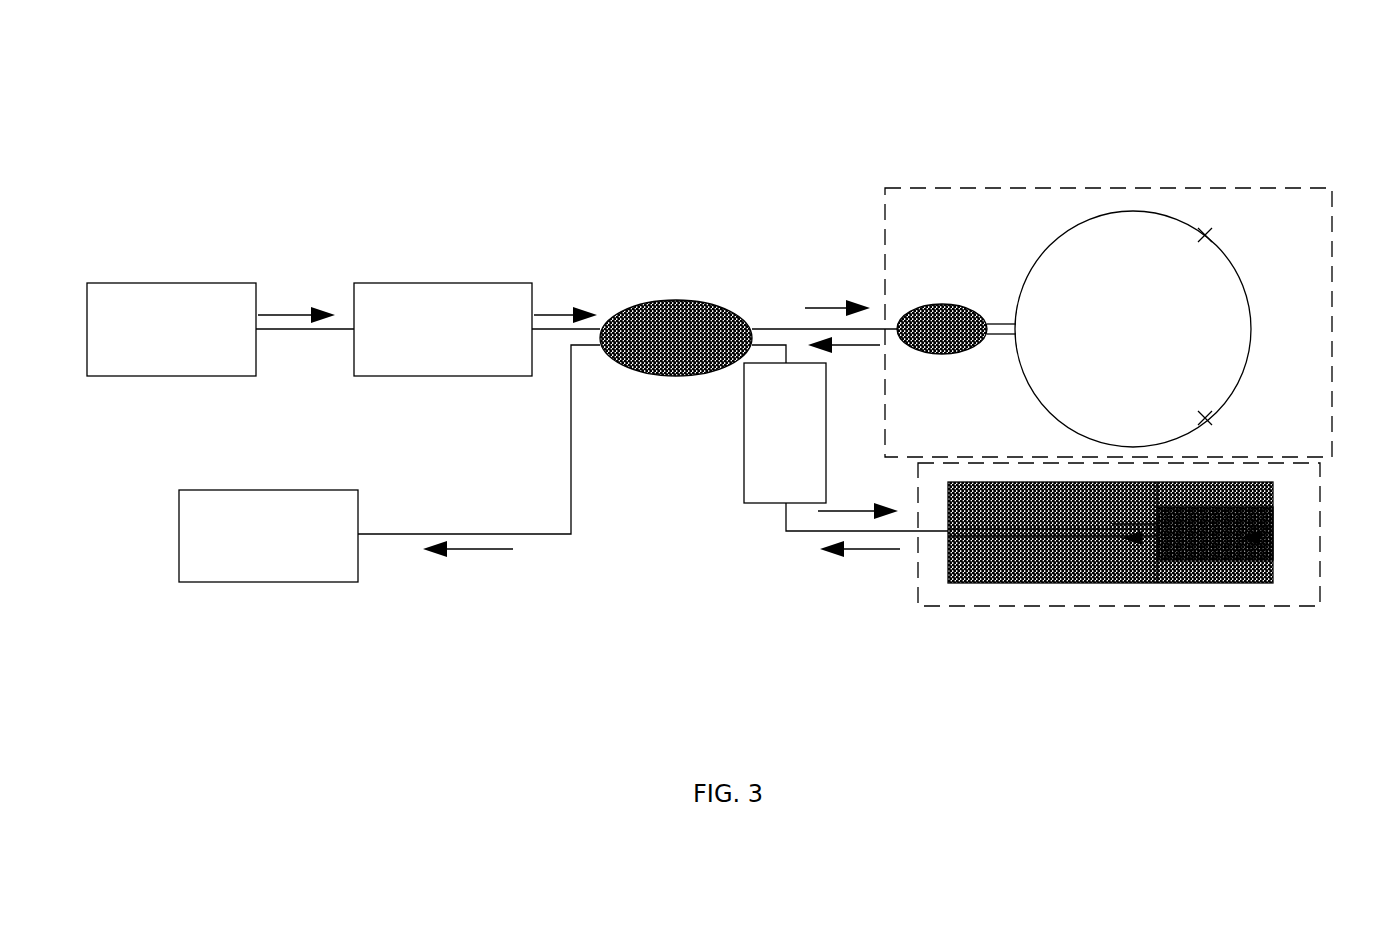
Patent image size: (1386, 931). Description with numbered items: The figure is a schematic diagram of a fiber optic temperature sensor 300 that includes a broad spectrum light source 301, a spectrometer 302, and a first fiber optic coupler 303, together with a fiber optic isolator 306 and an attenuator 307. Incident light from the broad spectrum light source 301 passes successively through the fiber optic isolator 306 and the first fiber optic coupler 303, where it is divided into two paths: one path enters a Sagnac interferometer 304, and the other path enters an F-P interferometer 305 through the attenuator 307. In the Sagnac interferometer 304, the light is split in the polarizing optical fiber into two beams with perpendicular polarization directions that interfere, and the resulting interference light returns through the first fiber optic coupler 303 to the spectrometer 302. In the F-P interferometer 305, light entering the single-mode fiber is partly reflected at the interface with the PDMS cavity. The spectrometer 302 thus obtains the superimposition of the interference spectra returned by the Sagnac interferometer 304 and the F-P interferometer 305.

The fiber optic temperature sensor 300 is at (568, 48).
The broad spectrum light source 301 is at (250, 282).
The spectrometer 302 is at (340, 490).
The first fiber optic coupler 303 is at (748, 322).
The Sagnac interferometer 304 is at (1256, 187).
The F-P interferometer 305 is at (1322, 533).
The fiber optic isolator 306 is at (462, 282).
The attenuator 307 is at (743, 458).